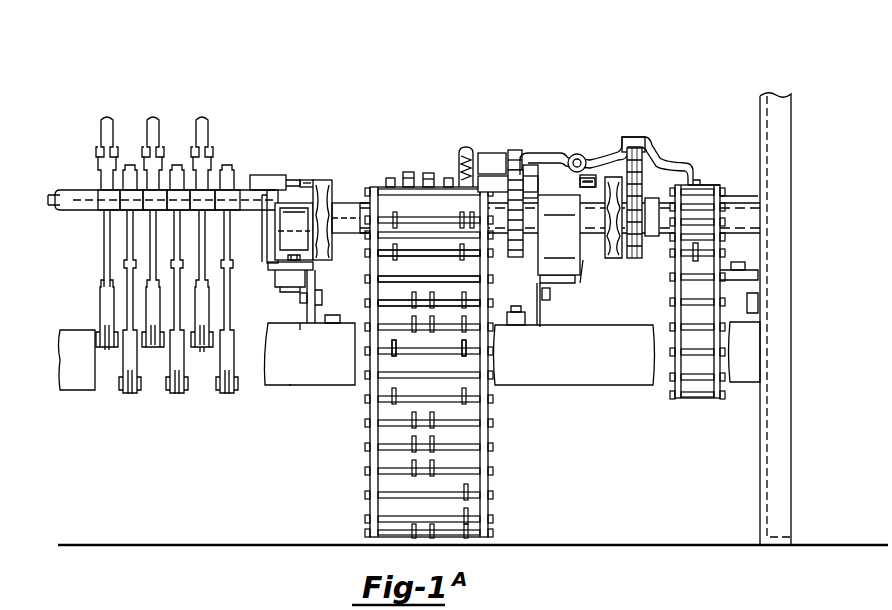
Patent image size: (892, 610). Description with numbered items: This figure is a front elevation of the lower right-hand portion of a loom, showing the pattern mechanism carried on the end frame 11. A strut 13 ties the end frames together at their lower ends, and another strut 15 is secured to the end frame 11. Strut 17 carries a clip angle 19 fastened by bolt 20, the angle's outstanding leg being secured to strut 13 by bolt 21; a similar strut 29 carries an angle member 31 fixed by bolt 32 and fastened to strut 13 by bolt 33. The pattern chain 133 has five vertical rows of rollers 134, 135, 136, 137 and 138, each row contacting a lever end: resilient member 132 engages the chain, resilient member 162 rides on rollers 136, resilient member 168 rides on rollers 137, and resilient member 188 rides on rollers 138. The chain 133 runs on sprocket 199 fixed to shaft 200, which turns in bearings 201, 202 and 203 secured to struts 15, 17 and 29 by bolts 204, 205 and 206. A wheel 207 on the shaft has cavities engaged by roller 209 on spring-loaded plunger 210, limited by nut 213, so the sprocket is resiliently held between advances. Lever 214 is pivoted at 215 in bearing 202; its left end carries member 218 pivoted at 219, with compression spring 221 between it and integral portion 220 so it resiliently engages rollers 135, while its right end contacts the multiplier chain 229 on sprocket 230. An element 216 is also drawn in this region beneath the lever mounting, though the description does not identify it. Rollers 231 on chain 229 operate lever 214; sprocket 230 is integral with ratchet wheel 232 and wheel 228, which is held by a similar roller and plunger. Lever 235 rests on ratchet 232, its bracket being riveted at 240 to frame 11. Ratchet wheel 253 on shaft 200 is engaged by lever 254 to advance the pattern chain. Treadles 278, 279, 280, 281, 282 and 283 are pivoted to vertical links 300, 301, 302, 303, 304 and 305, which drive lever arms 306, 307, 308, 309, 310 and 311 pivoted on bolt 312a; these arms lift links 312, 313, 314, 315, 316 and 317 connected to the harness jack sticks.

The end frame 11 is at (791, 245).
The strut 13 is at (312, 386).
The strut 15 is at (758, 300).
The strut 17 is at (541, 325).
The clip angle 19 is at (524, 325).
The bolt 20 is at (550, 294).
The bolt 21 is at (512, 312).
The strut 29 is at (295, 323).
The angle member 31 is at (313, 323).
The bolt 32 is at (300, 298).
The bolt 33 is at (328, 315).
The resilient member 132 is at (447, 178).
The pattern chain 133 is at (490, 462).
The rollers 134 is at (446, 254).
The rollers 135 is at (462, 356).
The rollers 136 is at (432, 302).
The rollers 137 is at (412, 302).
The rollers 138 is at (394, 356).
The resilient member 162 is at (428, 173).
The resilient member 168 is at (408, 172).
The resilient member 188 is at (390, 178).
The sprocket 199 is at (368, 200).
The shaft 200 is at (345, 203).
The bearing 201 is at (745, 203).
The bearing 202 is at (559, 235).
The bearing 203 is at (272, 226).
The bolts 204 is at (750, 262).
The bolts 205 is at (275, 256).
The bolts 206 is at (268, 266).
The wheel 207 is at (336, 180).
The roller 209 is at (308, 180).
The plunger 210 is at (582, 161).
The nut 213 is at (270, 190).
The lever 214 is at (558, 153).
The pivot 215 is at (578, 154).
The support 216 is at (582, 270).
The member 218 is at (508, 184).
The pivot 219 is at (492, 163).
The portion 220 is at (468, 147).
The compression spring 221 is at (510, 150).
The wheel 228 is at (634, 258).
The multiplier chain 229 is at (675, 304).
The sprocket 230 is at (710, 185).
The rollers 231 is at (700, 248).
The ratchet wheel 232 is at (656, 236).
The lever 235 is at (640, 132).
The rivets 240 is at (270, 175).
The ratchet wheel 253 is at (522, 257).
The lever 254 is at (528, 165).
The treadle 278 is at (227, 394).
The treadle 279 is at (221, 348).
The treadle 280 is at (176, 388).
The treadle 281 is at (175, 350).
The treadle 282 is at (130, 394).
The treadle 283 is at (104, 345).
The link 300 is at (205, 310).
The link 301 is at (209, 290).
The link 302 is at (155, 350).
The link 303 is at (146, 300).
The link 304 is at (130, 352).
The link 305 is at (100, 290).
The lever arm 306 is at (227, 200).
The lever arm 307 is at (202, 200).
The lever arm 308 is at (178, 200).
The lever arm 309 is at (155, 200).
The lever arm 310 is at (131, 200).
The lever arm 311 is at (109, 200).
The link 312 is at (228, 164).
The bolt 312a is at (73, 193).
The link 313 is at (202, 118).
The link 314 is at (177, 164).
The link 315 is at (153, 118).
The link 316 is at (129, 164).
The link 317 is at (107, 118).